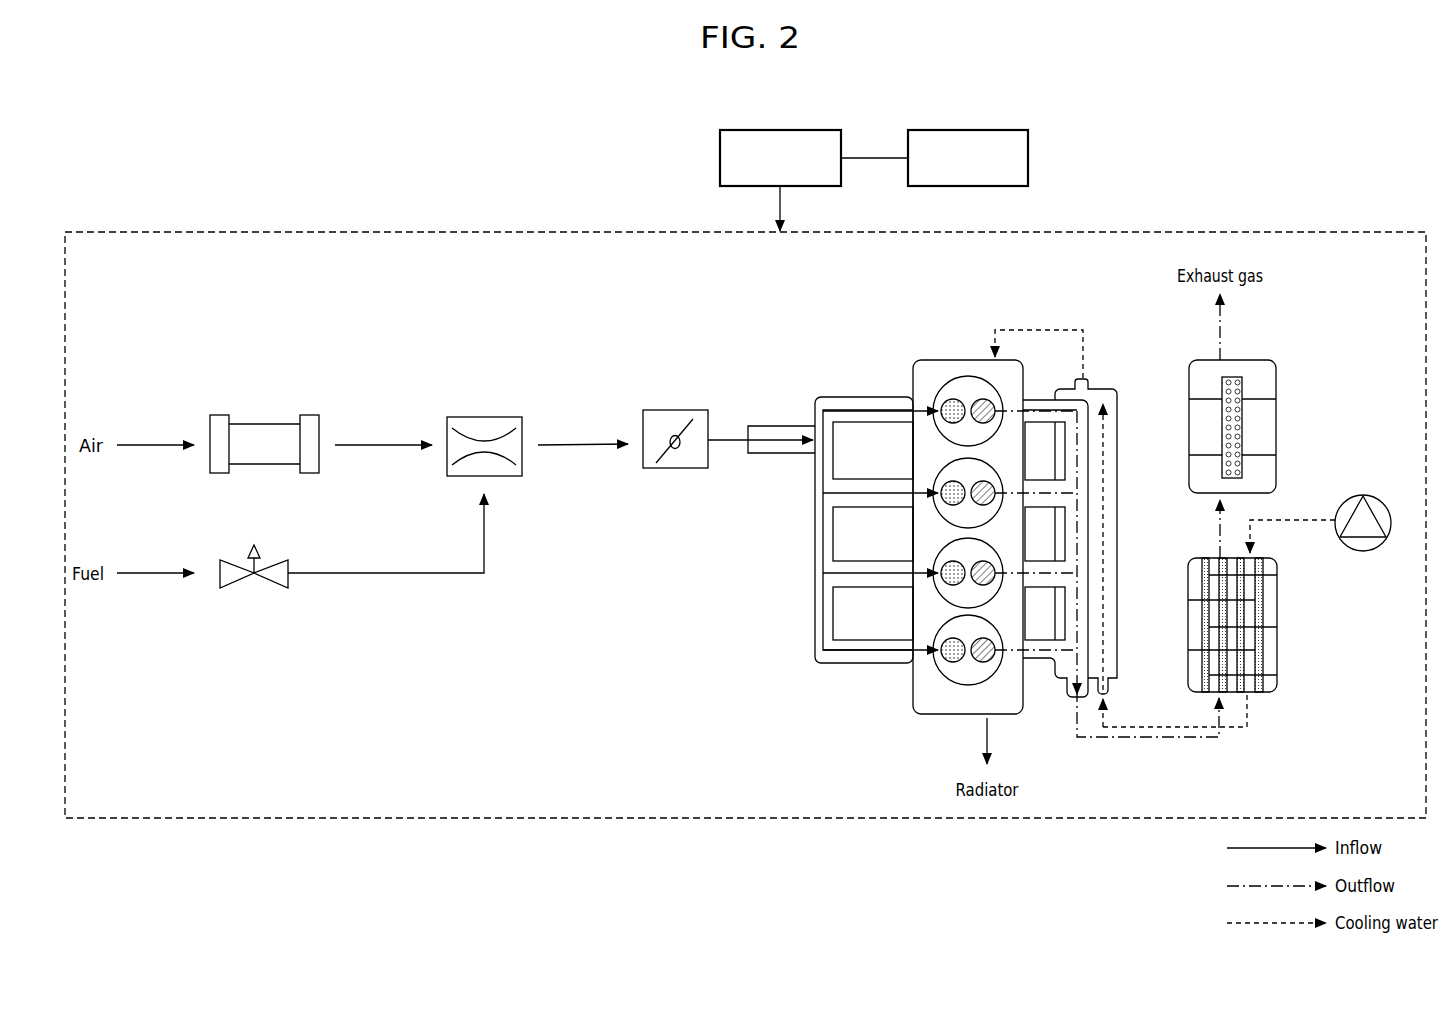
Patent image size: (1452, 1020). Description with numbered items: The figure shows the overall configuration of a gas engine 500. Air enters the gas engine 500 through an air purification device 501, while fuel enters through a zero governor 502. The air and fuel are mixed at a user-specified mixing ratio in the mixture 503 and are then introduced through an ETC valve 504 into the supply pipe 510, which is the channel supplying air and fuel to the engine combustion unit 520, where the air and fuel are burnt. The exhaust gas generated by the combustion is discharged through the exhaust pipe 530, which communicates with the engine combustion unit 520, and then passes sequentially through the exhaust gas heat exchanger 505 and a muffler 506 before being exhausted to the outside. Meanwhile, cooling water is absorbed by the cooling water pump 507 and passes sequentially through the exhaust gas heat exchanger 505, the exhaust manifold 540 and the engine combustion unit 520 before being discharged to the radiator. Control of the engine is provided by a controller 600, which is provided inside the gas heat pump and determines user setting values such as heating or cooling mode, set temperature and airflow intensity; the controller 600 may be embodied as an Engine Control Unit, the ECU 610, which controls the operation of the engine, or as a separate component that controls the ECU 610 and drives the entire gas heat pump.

The gas engine 500 is at (365, 230).
The air purification device 501 is at (264, 422).
The zero governor 502 is at (238, 586).
The mixture 503 is at (486, 416).
The ETC valve 504 is at (677, 410).
The exhaust gas heat exchanger 505 is at (1277, 655).
The muffler 506 is at (1276, 425).
The cooling water pump 507 is at (1378, 497).
The supply pipe 510 is at (848, 397).
The engine combustion unit 520 is at (948, 358).
The exhaust pipe 530 is at (1038, 398).
The exhaust manifold 540 is at (1102, 390).
The controller 600 is at (968, 130).
The ECU 610 is at (781, 130).